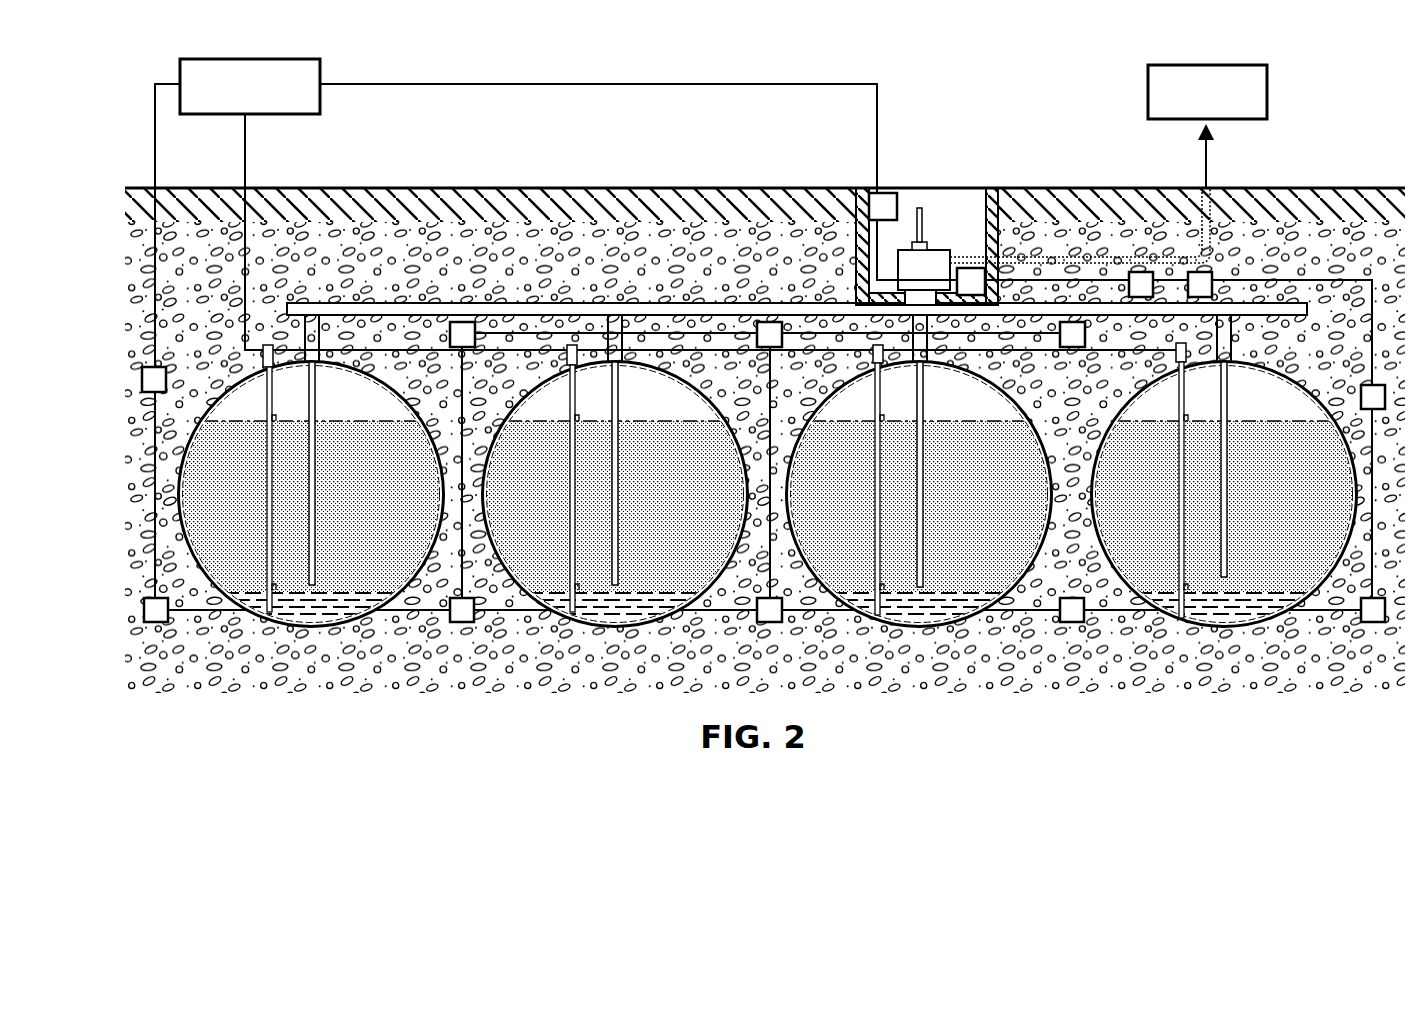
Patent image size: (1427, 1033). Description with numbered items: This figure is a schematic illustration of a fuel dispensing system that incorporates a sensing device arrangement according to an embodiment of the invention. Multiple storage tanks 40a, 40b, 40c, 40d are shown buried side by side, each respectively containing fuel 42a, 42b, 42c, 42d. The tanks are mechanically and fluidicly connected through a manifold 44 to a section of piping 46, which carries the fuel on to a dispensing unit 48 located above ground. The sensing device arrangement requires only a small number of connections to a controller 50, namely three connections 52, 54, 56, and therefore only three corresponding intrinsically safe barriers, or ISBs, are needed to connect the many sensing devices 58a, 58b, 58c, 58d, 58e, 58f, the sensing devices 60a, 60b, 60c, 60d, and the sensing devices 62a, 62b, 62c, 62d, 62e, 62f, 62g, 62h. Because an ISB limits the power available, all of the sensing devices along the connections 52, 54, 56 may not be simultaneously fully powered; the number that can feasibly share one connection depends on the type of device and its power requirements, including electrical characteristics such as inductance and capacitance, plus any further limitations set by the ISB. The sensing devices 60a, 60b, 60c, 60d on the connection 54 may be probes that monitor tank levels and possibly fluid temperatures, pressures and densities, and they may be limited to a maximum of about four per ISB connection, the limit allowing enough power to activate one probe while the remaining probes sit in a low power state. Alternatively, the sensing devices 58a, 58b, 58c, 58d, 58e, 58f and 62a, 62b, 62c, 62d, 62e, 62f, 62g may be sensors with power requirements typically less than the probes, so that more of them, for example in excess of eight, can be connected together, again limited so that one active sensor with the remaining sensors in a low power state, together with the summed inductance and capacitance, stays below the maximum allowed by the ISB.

The storage tank 40a is at (441, 506).
The storage tank 40b is at (745, 494).
The storage tank 40c is at (1049, 497).
The storage tank 40d is at (1354, 483).
The fuel 42a is at (248, 540).
The fuel 42b is at (548, 536).
The fuel 42c is at (848, 543).
The fuel 42d is at (1154, 538).
The manifold 44 is at (756, 303).
The section of piping 46 is at (1075, 257).
The dispensing unit 48 is at (1202, 65).
The controller 50 is at (254, 59).
The connection 52 is at (155, 133).
The connection 54 is at (245, 169).
The connection 56 is at (366, 84).
The sensing device 58a is at (142, 381).
The sensing device 58b is at (144, 611).
The sensing device 58c is at (470, 622).
The sensing device 58d is at (450, 329).
The sensing device 58e is at (782, 347).
The sensing device 58f is at (1085, 336).
The sensing device 60a is at (265, 471).
The sensing device 60b is at (568, 475).
The sensing device 60c is at (874, 468).
The sensing device 60d is at (1179, 478).
The sensing device 62a is at (897, 199).
The sensing device 62b is at (967, 268).
The sensing device 62c is at (1141, 272).
The sensing device 62d is at (1212, 277).
The sensing device 62e is at (1375, 385).
The sensing device 62f is at (1373, 622).
The sensing device 62g is at (1073, 622).
The sensing device 62h is at (773, 622).